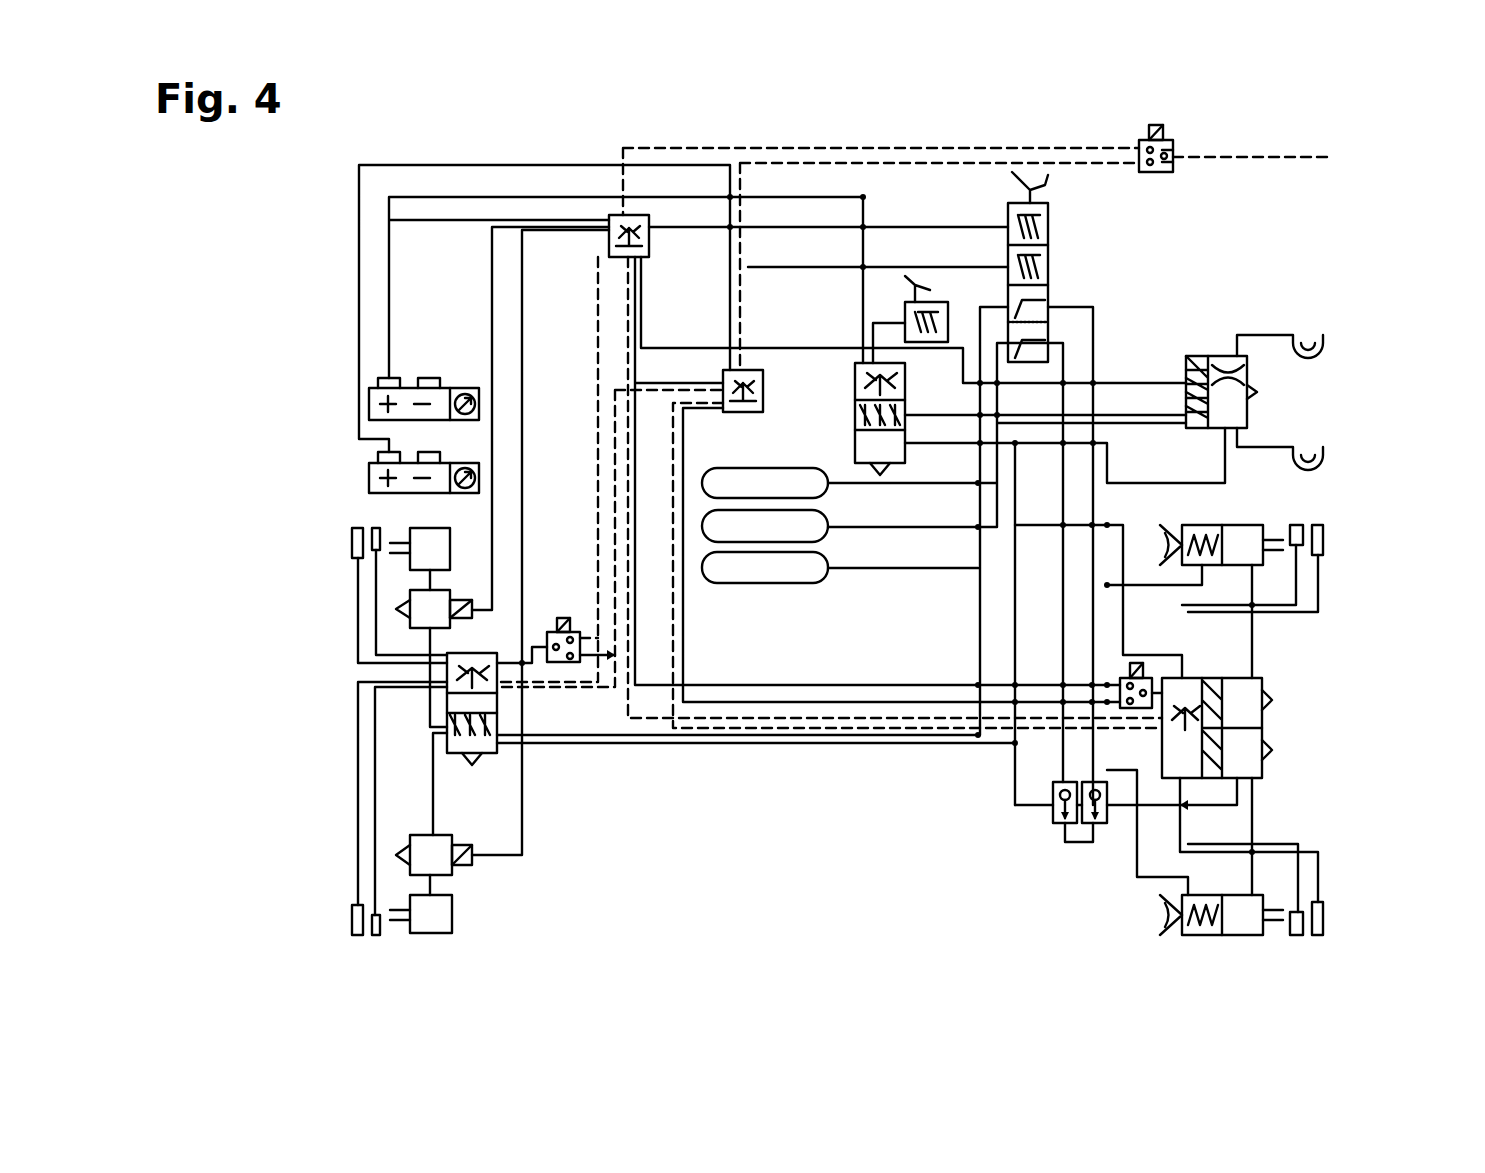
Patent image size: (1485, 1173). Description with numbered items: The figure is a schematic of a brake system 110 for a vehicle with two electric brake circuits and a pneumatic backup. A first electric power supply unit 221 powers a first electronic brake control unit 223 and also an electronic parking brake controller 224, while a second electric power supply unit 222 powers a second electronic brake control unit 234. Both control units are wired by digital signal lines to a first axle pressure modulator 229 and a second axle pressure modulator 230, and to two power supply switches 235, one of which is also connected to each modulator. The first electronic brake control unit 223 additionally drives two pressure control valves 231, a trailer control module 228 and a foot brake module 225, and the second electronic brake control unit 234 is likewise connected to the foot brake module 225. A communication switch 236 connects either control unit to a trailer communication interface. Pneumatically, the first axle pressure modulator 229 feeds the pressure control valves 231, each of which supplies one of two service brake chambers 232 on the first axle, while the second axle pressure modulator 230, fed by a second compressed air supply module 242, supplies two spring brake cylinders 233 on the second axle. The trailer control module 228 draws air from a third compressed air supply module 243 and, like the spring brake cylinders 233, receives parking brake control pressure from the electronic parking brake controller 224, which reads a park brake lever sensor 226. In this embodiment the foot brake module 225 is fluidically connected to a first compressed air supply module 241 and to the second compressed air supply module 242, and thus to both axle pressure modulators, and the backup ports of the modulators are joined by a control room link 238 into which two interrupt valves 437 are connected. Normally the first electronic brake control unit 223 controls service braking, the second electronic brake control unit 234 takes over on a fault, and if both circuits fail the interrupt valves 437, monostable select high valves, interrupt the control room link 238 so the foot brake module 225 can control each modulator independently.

The brake system 110 is at (382, 150).
The first electric power supply unit 221 is at (369, 402).
The second electric power supply unit 222 is at (369, 472).
The first electronic brake control unit 223 is at (620, 215).
The electronic parking brake controller 224 is at (855, 385).
The foot brake module 225 is at (1062, 238).
The park brake lever sensor 226 is at (948, 323).
The trailer control module 228 is at (1250, 412).
The first axle pressure modulator 229 is at (447, 660).
The second axle pressure modulator 230 is at (1265, 785).
The pressure control valves 231 is at (410, 600).
The service brake chambers 232 is at (420, 528).
The spring brake cylinders 233 is at (1245, 525).
The second electronic brake control unit 234 is at (723, 385).
The power supply switches 235 is at (562, 618).
The communication switch 236 is at (1173, 150).
The control room link 238 is at (950, 745).
The first compressed air supply module 241 is at (800, 583).
The second compressed air supply module 242 is at (768, 542).
The third compressed air supply module 243 is at (800, 468).
The interrupt valves 437 is at (1050, 818).